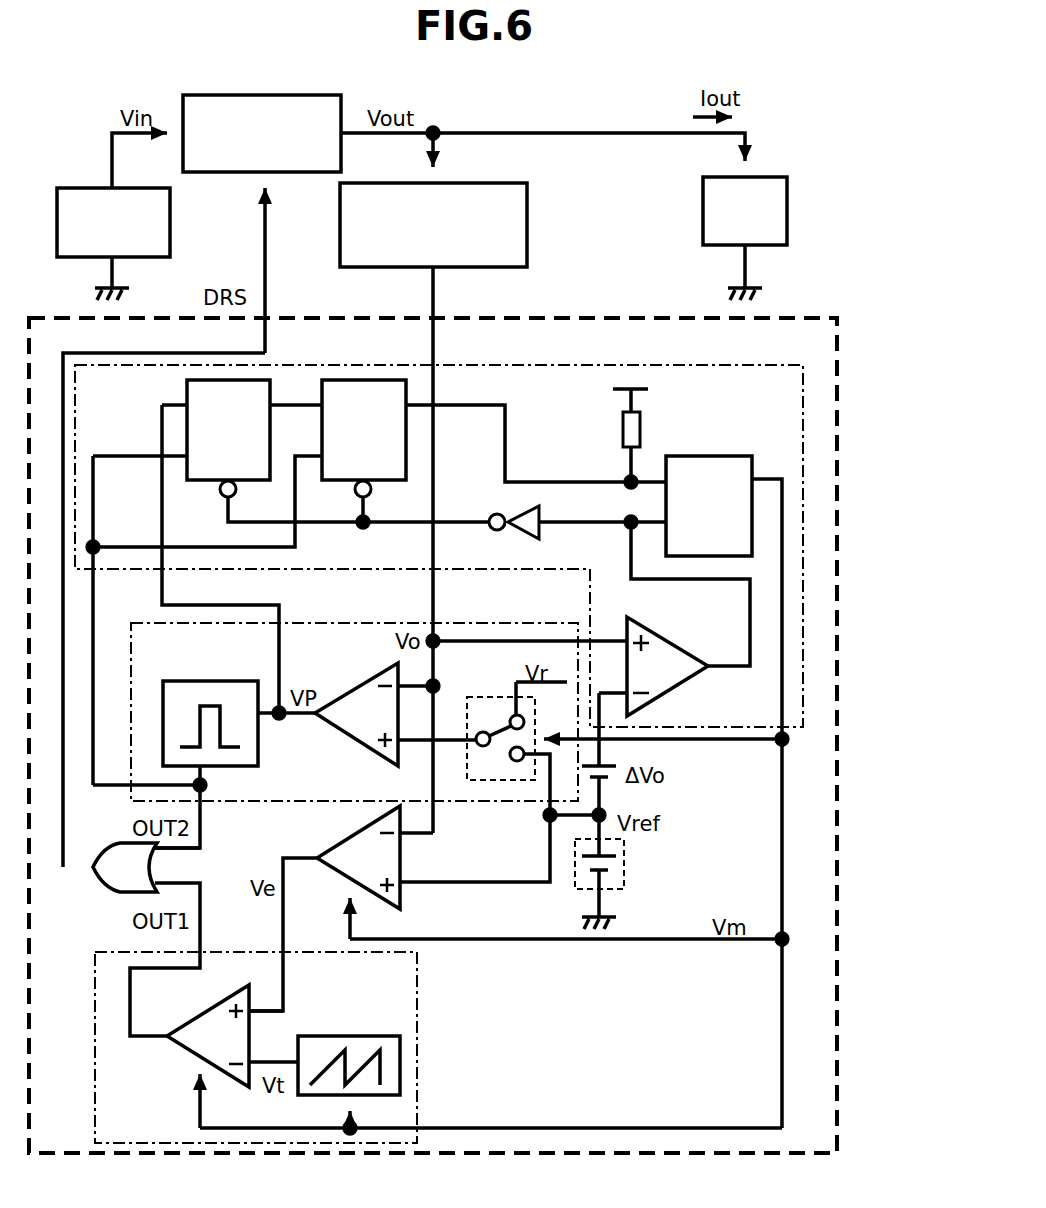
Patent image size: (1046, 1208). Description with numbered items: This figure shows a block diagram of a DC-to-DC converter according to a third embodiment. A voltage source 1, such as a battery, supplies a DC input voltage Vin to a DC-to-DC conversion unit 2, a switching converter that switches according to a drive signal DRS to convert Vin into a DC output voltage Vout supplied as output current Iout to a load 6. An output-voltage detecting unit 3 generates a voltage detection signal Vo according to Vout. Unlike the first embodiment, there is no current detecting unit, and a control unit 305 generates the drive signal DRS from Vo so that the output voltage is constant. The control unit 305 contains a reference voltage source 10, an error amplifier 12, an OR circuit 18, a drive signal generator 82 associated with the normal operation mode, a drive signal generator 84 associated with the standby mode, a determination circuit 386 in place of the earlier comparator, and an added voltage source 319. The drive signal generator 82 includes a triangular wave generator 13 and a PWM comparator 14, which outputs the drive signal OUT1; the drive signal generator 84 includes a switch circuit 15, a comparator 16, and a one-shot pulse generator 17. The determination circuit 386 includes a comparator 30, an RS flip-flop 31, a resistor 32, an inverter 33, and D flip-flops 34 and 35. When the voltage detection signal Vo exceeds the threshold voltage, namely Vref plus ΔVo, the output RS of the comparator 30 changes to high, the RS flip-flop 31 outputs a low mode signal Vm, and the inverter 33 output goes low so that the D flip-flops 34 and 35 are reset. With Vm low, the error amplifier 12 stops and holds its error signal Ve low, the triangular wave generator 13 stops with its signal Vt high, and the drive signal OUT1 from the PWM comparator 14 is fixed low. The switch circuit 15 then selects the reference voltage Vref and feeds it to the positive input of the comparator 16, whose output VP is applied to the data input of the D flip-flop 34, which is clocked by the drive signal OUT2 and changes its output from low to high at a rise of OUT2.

The voltage source 1 is at (170, 225).
The DC-to-DC conversion unit 2 is at (274, 95).
The output-voltage detecting unit 3 is at (340, 225).
The load 6 is at (702, 213).
The reference voltage source 10 is at (624, 877).
The error amplifier 12 is at (325, 848).
The triangular wave generator 13 is at (350, 1036).
The PWM comparator 14 is at (170, 1030).
The switch circuit 15 is at (470, 697).
The comparator 16 is at (348, 690).
The one-shot pulse generator 17 is at (203, 681).
The OR circuit 18 is at (100, 878).
The comparator 30 is at (683, 680).
The RS flip-flop 31 is at (710, 456).
The resistor 32 is at (623, 427).
The inverter 33 is at (540, 530).
The D flip-flop 34 is at (187, 382).
The D flip-flop 35 is at (380, 483).
The drive signal generator 82 is at (95, 1045).
The drive signal generator 84 is at (348, 622).
The control unit 305 is at (837, 705).
The voltage source 319 is at (610, 778).
The determination circuit 386 is at (550, 365).